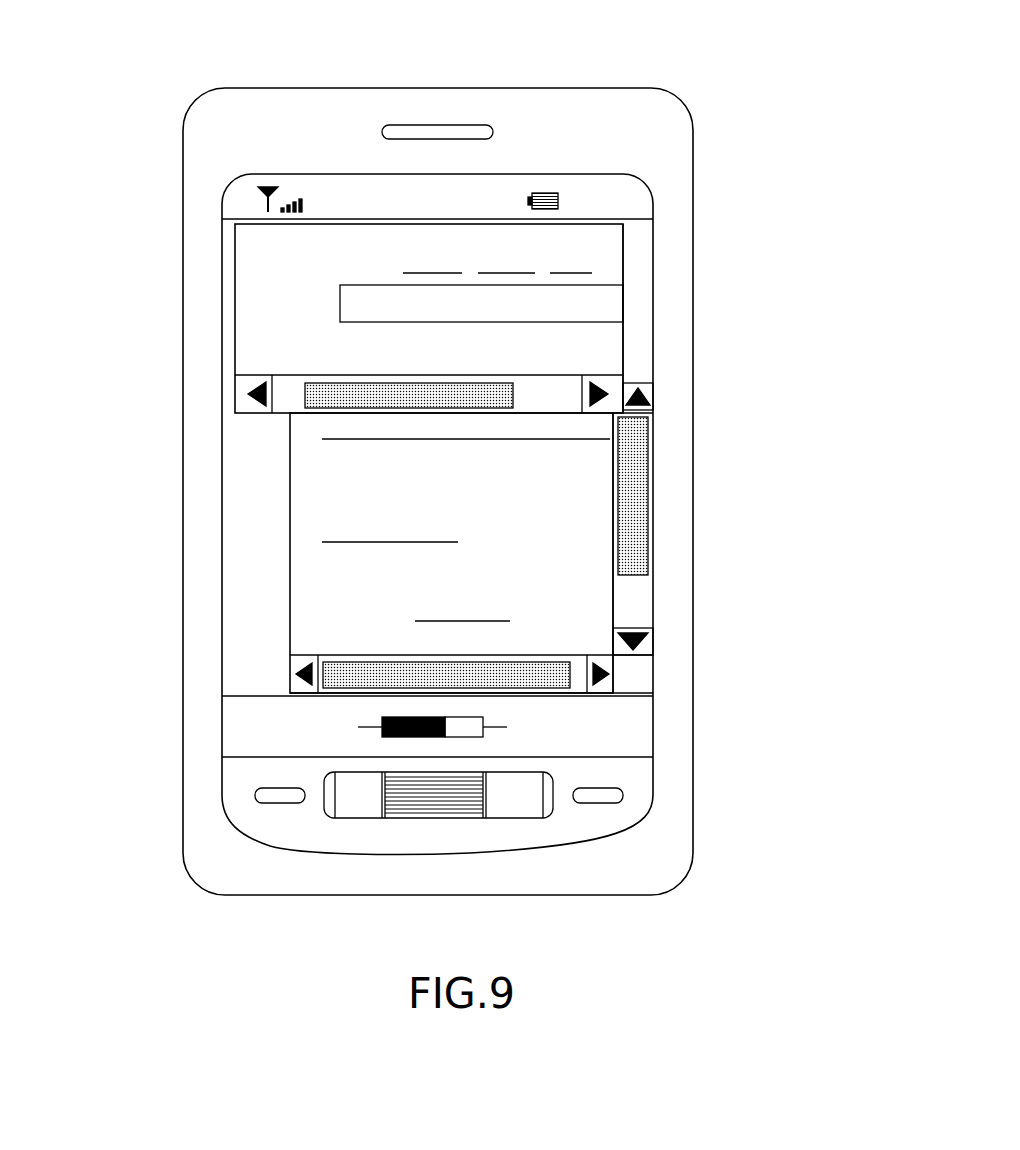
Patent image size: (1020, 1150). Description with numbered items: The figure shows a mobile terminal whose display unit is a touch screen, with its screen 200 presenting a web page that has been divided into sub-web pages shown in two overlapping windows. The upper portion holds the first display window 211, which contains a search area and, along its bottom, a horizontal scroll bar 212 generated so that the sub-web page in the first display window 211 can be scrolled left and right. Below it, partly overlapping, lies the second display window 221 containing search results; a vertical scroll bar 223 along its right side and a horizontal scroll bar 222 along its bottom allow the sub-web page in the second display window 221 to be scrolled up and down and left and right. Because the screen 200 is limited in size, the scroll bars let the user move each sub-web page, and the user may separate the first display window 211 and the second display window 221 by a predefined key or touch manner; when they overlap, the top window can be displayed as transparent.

The screen 200 is at (620, 161).
The first display window 211 is at (229, 339).
The horizontal scroll bar 212 is at (340, 398).
The second display window 221 is at (276, 554).
The horizontal scroll bar 222 is at (538, 674).
The vertical scroll bar 223 is at (637, 478).